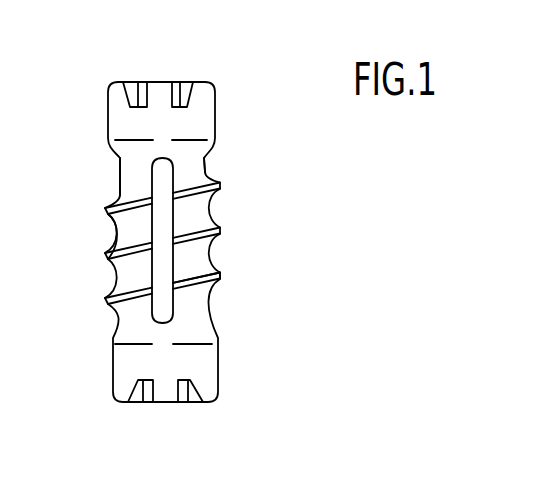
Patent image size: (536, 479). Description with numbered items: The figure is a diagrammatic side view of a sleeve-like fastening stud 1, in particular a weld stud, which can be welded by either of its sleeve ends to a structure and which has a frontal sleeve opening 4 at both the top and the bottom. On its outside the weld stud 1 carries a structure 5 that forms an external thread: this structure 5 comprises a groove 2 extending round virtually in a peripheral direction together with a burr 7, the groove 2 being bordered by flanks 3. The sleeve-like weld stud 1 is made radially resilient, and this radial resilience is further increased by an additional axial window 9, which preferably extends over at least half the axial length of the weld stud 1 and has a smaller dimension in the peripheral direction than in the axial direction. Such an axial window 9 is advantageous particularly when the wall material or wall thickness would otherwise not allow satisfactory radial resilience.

The fastening stud 1 is at (155, 229).
The groove 2 is at (104, 235).
The flanks 3 is at (210, 201).
The frontal sleeve opening 4 is at (162, 82).
The structure 5 is at (90, 273).
The burr 7 is at (210, 273).
The axial window 9 is at (162, 303).